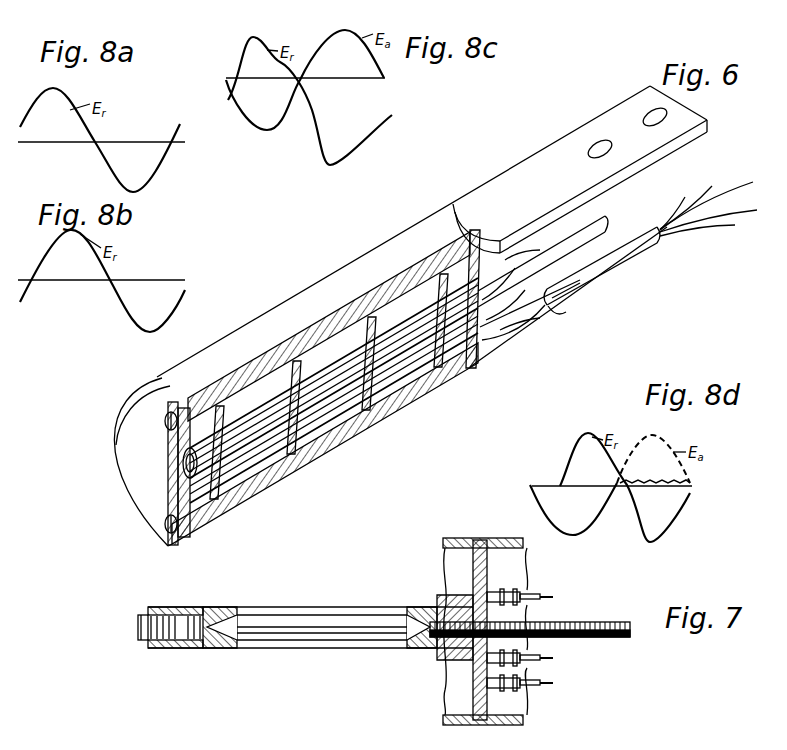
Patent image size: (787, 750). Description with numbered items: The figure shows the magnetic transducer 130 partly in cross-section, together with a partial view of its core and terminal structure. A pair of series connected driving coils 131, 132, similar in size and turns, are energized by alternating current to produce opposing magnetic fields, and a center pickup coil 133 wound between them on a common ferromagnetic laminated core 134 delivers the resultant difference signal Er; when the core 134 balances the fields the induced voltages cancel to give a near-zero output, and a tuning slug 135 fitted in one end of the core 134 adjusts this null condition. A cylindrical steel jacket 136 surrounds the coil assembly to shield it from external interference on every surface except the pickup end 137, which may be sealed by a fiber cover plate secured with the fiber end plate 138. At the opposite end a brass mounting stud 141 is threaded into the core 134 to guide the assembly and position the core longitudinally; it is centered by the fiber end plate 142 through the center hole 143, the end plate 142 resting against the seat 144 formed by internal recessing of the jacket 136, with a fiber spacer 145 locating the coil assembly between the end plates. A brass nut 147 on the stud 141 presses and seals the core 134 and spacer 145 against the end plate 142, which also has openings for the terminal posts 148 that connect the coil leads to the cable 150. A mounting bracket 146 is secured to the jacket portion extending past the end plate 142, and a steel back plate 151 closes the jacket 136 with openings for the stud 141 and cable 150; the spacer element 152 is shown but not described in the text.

In FIG. 6, the magnetic transducer 130 is at (413, 221).
In FIG. 6, the driving coil 131 is at (272, 482).
In FIG. 6, the driving coil 132 is at (407, 400).
In FIG. 6, the center pickup coil 133 is at (343, 442).
In FIG. 6, the ferromagnetic laminated core 134 is at (330, 390).
In FIG. 7, the ferromagnetic laminated core 134 is at (378, 598).
In FIG. 6, the tuning slug 135 is at (183, 482).
In FIG. 7, the tuning slug 135 is at (138, 642).
In FIG. 6, the steel jacket 136 is at (280, 305).
In FIG. 6, the pickup end 137 is at (128, 472).
In FIG. 6, the fiber end plate 138 is at (150, 381).
In FIG. 6, the brass mounting stud 141 is at (603, 224).
In FIG. 7, the brass mounting stud 141 is at (622, 617).
In FIG. 6, the fiber end plate 142 is at (476, 368).
In FIG. 7, the fiber end plate 142 is at (480, 714).
In FIG. 6, the center hole 143 is at (522, 248).
In FIG. 7, the seat 144 is at (493, 532).
In FIG. 7, the fiber spacer 145 is at (437, 657).
In FIG. 6, the mounting bracket 146 is at (575, 135).
In FIG. 7, the brass nut 147 is at (510, 614).
In FIG. 7, the terminal posts 148 is at (497, 693).
In FIG. 6, the cable 150 is at (638, 268).
In FIG. 6, the steel back plate 151 is at (580, 312).
In FIG. 6, the spacer 152 is at (327, 447).